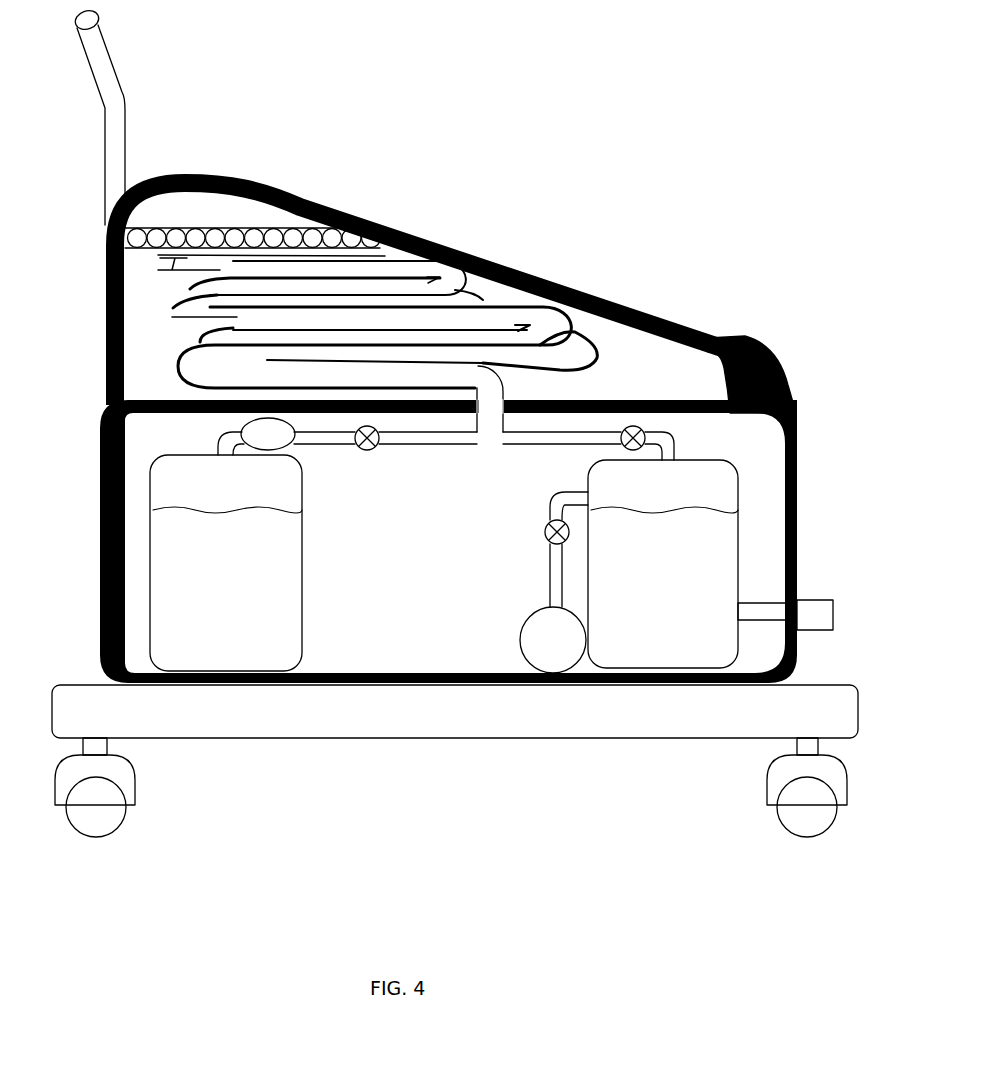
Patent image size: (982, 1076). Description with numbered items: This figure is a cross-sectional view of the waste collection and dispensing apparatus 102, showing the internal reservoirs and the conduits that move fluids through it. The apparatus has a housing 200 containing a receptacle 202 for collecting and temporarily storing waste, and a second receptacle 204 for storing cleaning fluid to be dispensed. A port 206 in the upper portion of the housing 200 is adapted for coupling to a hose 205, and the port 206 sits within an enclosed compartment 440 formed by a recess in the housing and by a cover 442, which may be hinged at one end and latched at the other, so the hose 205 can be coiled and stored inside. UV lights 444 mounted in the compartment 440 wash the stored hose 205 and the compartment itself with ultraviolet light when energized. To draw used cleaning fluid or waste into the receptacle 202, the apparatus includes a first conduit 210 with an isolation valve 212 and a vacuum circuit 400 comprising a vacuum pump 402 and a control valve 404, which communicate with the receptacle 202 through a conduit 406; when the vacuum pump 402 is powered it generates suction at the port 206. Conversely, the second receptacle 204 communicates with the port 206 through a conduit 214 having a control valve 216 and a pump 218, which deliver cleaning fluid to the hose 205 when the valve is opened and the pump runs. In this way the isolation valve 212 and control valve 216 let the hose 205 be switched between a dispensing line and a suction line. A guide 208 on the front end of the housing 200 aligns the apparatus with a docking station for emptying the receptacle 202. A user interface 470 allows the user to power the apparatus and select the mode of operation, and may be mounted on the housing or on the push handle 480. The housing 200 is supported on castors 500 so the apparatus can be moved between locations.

The waste collection and dispensing apparatus 102 is at (486, 216).
The housing 200 is at (98, 469).
The receptacle 202 is at (704, 488).
The second receptacle 204 is at (262, 593).
The hose 205 is at (233, 277).
The port 206 is at (495, 398).
The guide 208 is at (784, 613).
The first conduit 210 is at (584, 431).
The isolation valve 212 is at (646, 428).
The conduit 214 is at (428, 445).
The control valve 216 is at (371, 451).
The pump 218 is at (283, 446).
The vacuum circuit 400 is at (548, 654).
The vacuum pump 402 is at (537, 653).
The control valve 404 is at (568, 497).
The conduit 406 is at (575, 503).
The compartment 440 is at (503, 293).
The cover 442 is at (327, 205).
The UV lights 444 is at (263, 230).
The user interface 470 is at (106, 308).
The push handle 480 is at (100, 55).
The castors 500 is at (148, 793).